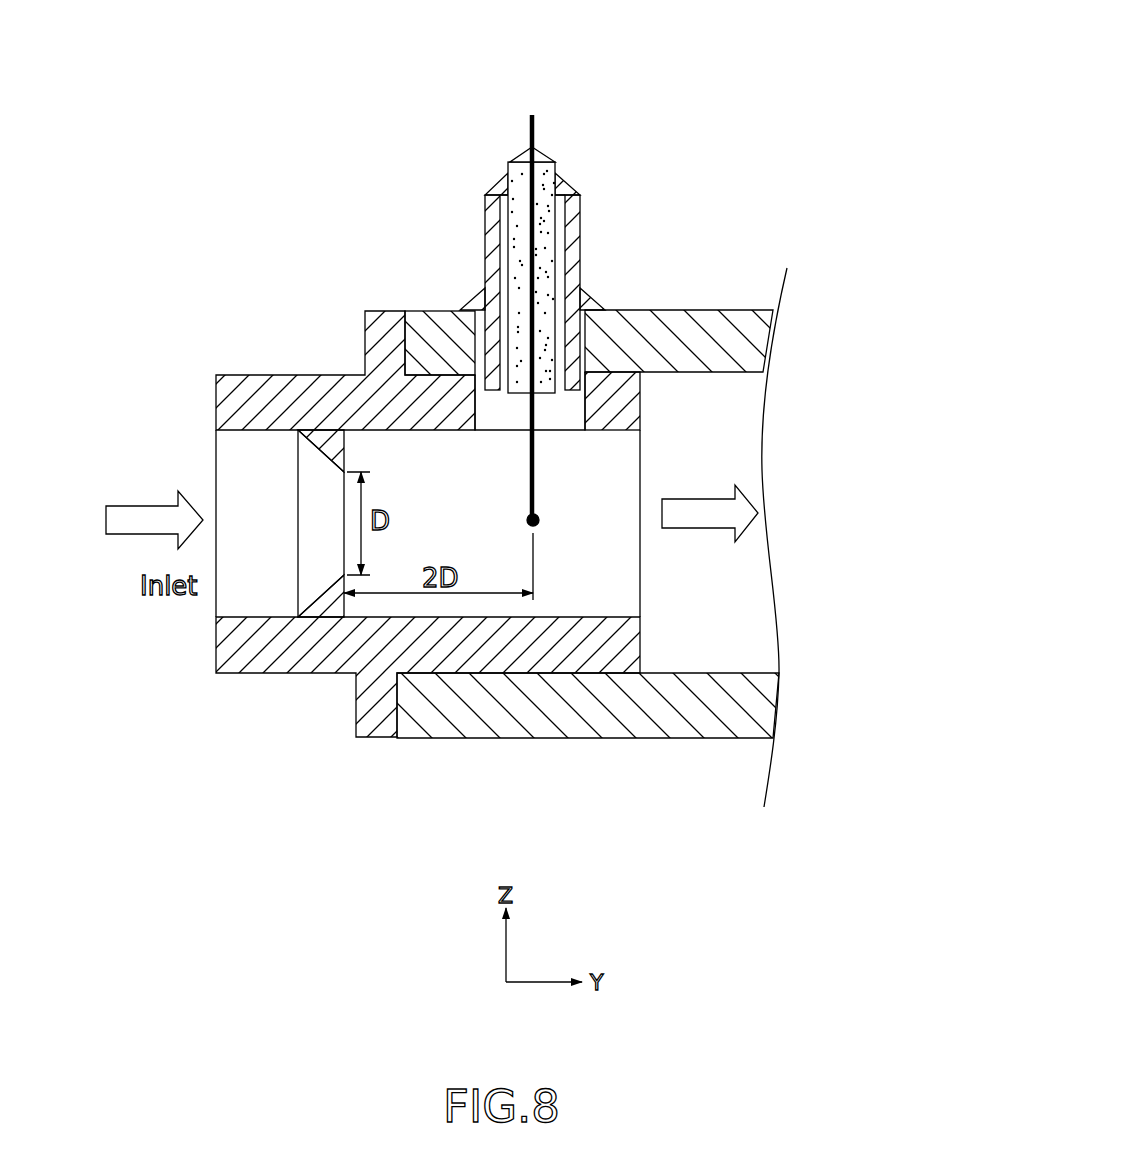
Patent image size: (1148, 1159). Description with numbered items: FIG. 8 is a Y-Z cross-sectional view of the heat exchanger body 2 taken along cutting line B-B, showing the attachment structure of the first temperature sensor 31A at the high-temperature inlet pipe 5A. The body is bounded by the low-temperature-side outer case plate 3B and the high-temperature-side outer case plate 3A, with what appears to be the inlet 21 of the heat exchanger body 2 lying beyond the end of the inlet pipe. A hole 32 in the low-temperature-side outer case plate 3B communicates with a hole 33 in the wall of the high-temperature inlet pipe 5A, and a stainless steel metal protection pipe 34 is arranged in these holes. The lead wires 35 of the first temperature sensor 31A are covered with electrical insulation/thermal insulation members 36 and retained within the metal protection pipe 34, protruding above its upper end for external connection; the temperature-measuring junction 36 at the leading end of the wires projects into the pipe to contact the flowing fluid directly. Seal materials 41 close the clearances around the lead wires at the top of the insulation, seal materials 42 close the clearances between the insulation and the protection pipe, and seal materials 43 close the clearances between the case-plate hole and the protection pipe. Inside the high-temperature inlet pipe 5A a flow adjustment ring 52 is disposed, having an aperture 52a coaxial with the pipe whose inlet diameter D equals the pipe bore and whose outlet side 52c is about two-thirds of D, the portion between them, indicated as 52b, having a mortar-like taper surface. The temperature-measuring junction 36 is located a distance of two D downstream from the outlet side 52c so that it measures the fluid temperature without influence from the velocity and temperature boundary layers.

The heat exchanger body 2 is at (646, 502).
The high-temperature-side outer case plate 3A is at (758, 700).
The low-temperature-side outer case plate 3B is at (757, 343).
The exhaust passage 21 is at (733, 432).
The high-temperature inlet pipe 5A is at (372, 514).
The first temperature sensor 31A is at (546, 267).
The hole 32 is at (546, 279).
The hole 33 is at (490, 413).
The metal protection pipe 34 is at (582, 228).
The lead wires 35 is at (535, 128).
The electrical insulation/thermal insulation member; temperature-measuring junction 36 is at (555, 162).
The seal material 41 is at (528, 158).
The seal material 42 is at (568, 187).
The seal material 43 is at (600, 300).
The flow adjustment ring 52 is at (271, 585).
The aperture 52a is at (297, 470).
The orifice bore 52b is at (333, 453).
The outlet side 52c is at (345, 600).